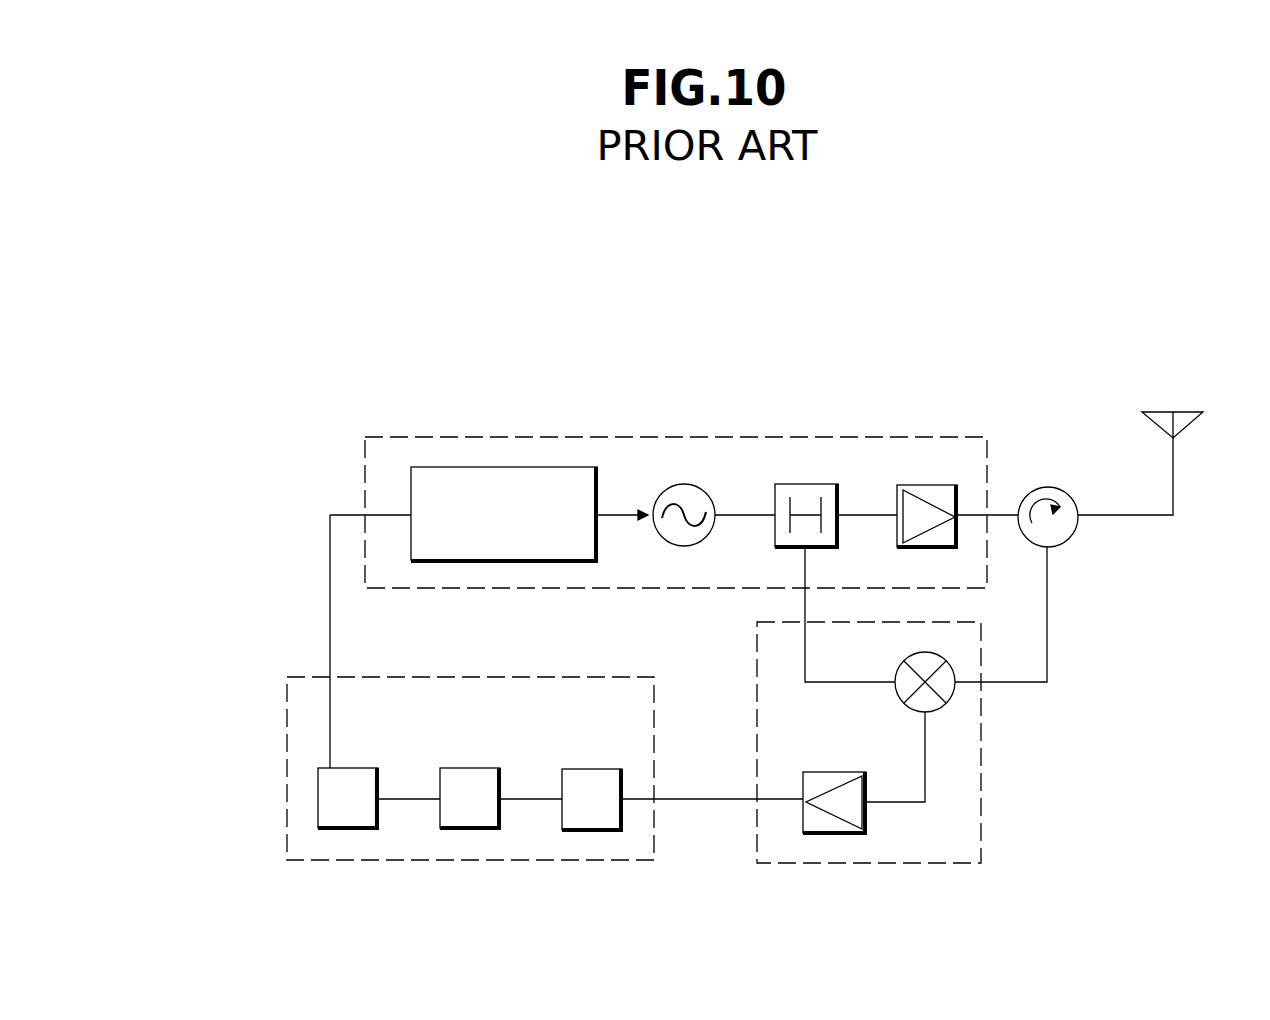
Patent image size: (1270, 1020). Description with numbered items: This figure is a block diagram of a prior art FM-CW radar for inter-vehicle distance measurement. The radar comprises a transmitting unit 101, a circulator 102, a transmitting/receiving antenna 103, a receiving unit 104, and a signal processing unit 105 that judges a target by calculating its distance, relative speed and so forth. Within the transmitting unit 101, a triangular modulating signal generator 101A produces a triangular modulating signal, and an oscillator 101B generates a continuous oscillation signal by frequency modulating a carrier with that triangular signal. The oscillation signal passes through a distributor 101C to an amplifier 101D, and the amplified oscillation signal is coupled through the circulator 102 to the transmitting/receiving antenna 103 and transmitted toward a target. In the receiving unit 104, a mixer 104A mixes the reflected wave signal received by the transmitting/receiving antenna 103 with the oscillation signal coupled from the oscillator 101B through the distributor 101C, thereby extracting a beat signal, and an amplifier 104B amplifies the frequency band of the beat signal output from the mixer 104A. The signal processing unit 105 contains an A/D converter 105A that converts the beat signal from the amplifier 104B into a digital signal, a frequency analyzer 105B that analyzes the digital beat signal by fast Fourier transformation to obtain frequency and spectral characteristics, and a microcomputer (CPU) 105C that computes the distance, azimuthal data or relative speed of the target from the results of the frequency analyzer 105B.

The transmitting unit 101 is at (392, 437).
The triangular modulating signal generator 101A is at (495, 467).
The oscillator 101B is at (675, 485).
The distributor 101C is at (797, 484).
The amplifier 101D is at (925, 485).
The circulator 102 is at (1043, 488).
The transmitting/receiving antenna 103 is at (1163, 412).
The receiving unit 104 is at (981, 793).
The mixer 104A is at (946, 700).
The amplifier 104B is at (845, 834).
The signal processing unit 105 is at (309, 677).
The A/D converter 105A is at (592, 831).
The frequency analyzer 105B is at (475, 829).
The microcomputer (CPU) 105C is at (354, 829).